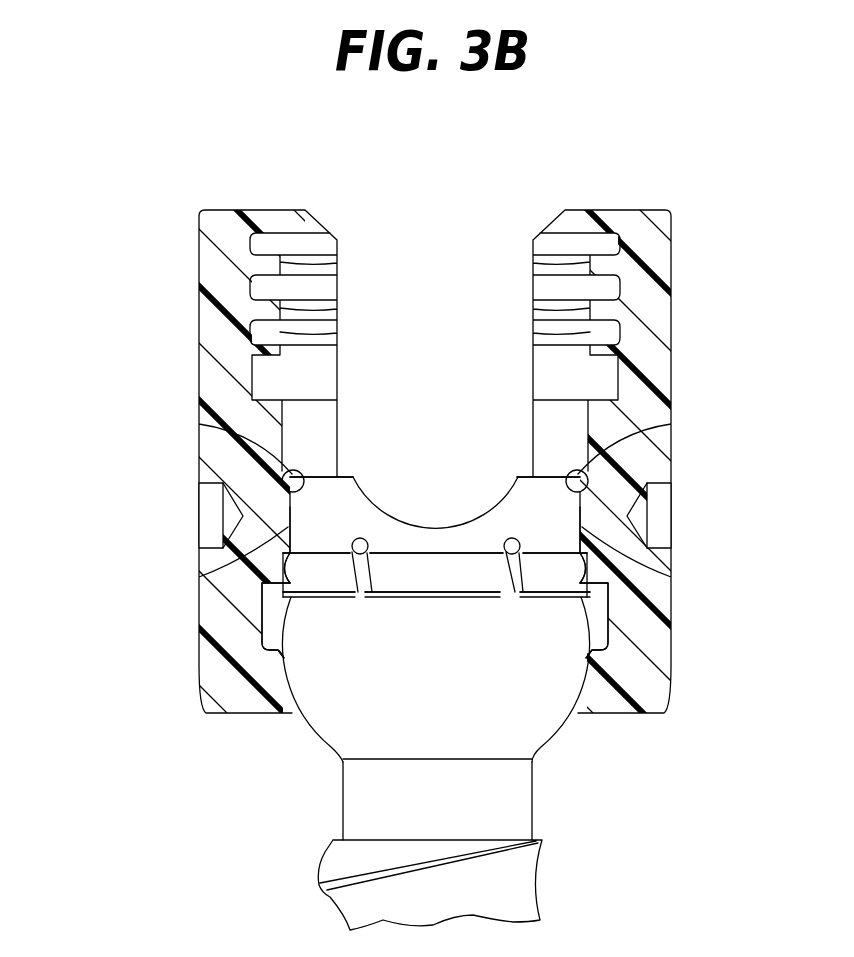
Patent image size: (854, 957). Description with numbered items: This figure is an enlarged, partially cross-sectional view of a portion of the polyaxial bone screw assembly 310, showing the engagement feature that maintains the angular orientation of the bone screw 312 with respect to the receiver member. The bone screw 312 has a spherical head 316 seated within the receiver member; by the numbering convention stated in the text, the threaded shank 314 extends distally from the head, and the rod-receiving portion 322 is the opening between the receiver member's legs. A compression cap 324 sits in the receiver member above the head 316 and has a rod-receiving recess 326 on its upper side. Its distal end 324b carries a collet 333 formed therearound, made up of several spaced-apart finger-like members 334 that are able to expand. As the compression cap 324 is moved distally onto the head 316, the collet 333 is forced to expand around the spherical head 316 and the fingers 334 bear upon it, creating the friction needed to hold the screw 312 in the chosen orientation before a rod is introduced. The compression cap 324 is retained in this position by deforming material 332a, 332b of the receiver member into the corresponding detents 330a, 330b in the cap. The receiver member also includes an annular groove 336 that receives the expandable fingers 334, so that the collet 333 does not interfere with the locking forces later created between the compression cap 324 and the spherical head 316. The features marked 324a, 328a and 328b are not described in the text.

The polyaxial bone screw assembly 310 is at (149, 130).
The bone screw 312 is at (258, 792).
The stud shank 314 is at (536, 881).
The spherical head 316 is at (468, 688).
The housing 322 is at (491, 210).
The compression cap 324 is at (566, 530).
The upper bearing portion 324a is at (598, 486).
The distal end 324b is at (612, 591).
The rod-receiving recess 326 is at (436, 511).
The groove 328a is at (696, 511).
The groove 328b is at (176, 516).
The detent 330a is at (606, 473).
The detent 330b is at (296, 474).
The material 332a is at (600, 522).
The material 332b is at (283, 557).
The collet 333 is at (568, 570).
The finger-like members 334 is at (348, 587).
The annular groove 336 is at (262, 617).